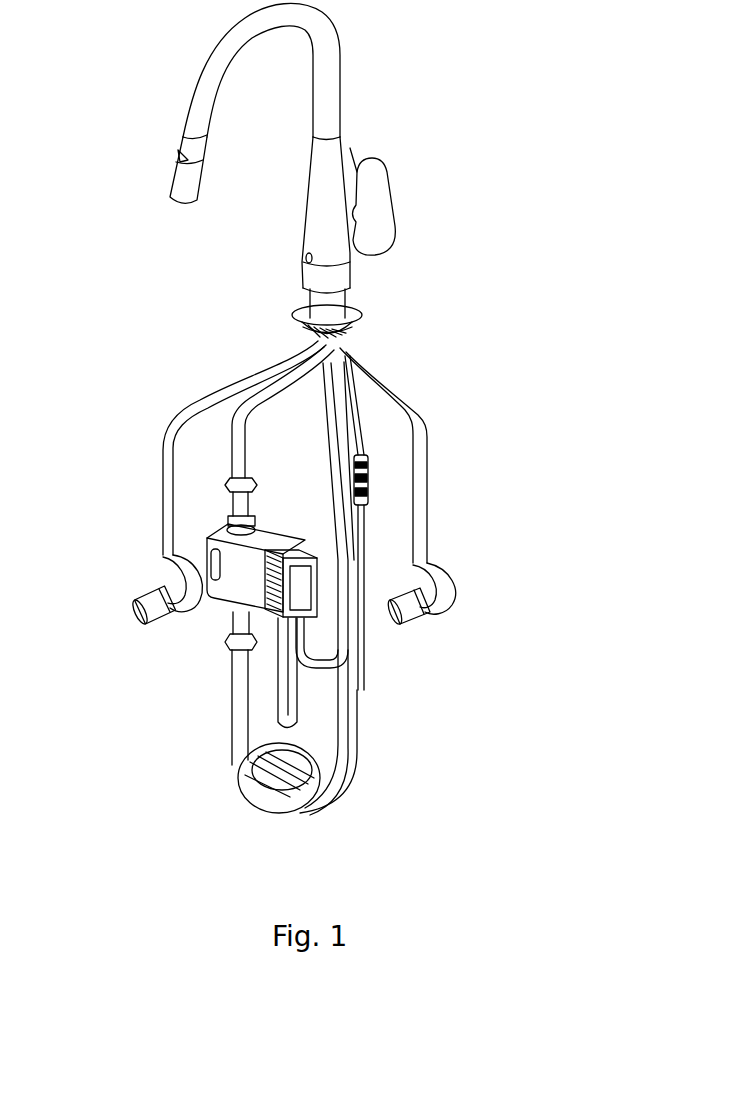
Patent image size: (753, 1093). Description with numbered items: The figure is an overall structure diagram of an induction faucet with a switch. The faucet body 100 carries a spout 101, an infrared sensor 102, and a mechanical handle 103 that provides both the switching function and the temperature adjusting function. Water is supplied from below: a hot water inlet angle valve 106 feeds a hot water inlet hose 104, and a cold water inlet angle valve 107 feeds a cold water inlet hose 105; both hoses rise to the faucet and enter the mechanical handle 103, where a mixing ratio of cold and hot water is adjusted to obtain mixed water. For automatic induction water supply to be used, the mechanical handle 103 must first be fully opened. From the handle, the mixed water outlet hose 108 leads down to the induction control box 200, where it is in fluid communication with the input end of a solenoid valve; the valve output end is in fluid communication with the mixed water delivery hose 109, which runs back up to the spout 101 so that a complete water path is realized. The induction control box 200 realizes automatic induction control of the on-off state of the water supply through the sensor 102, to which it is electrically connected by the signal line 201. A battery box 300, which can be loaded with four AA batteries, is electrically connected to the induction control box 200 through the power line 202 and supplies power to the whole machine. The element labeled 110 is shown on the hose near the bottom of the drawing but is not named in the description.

The faucet body 100 is at (345, 147).
The spout 101 is at (177, 203).
The infrared sensor 102 is at (300, 263).
The mechanical handle 103 is at (395, 190).
The hot water inlet hose 104 is at (163, 453).
The cold water inlet hose 105 is at (430, 433).
The hot water inlet angle valve 106 is at (133, 603).
The cold water inlet angle valve 107 is at (423, 618).
The mixed water outlet hose 108 is at (230, 413).
The mixed water delivery hose 109 is at (353, 730).
The hose loop / counterweight 110 is at (305, 810).
The induction control box 200 is at (230, 588).
The signal line 201 is at (375, 488).
The power line 202 is at (273, 713).
The battery box 300 is at (305, 600).